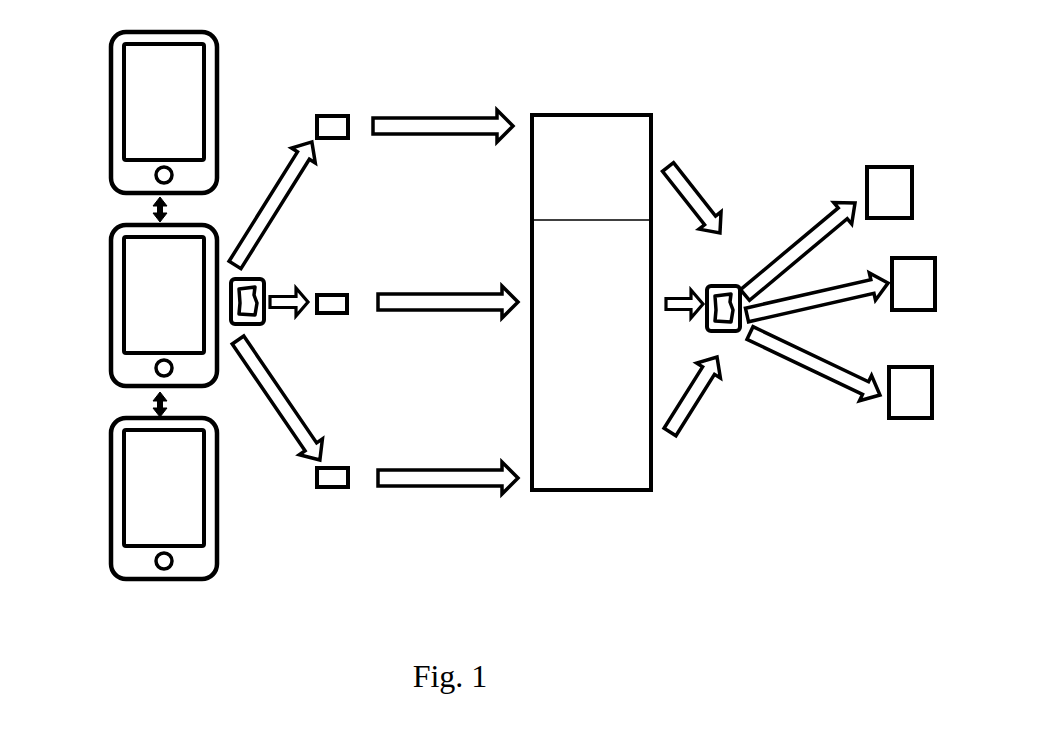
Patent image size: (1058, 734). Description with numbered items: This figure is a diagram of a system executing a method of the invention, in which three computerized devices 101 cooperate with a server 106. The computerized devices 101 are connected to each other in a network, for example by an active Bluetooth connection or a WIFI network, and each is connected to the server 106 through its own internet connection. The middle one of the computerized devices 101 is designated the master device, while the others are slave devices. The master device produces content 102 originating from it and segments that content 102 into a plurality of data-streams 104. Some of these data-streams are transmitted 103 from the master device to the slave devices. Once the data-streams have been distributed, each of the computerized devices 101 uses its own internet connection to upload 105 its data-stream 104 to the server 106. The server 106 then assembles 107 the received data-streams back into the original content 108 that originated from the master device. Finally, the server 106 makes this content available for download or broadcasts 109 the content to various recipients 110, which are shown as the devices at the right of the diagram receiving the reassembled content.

The computerized devices 101 is at (105, 500).
The content 102 is at (257, 273).
The transmission of data-streams 103 is at (292, 392).
The data-streams 104 is at (355, 298).
The upload 105 is at (433, 320).
The server 106 is at (658, 120).
The assembling of data-streams 107 is at (683, 285).
The original content 108 is at (732, 332).
The download or broadcast 109 is at (828, 205).
The recipients 110 is at (925, 255).